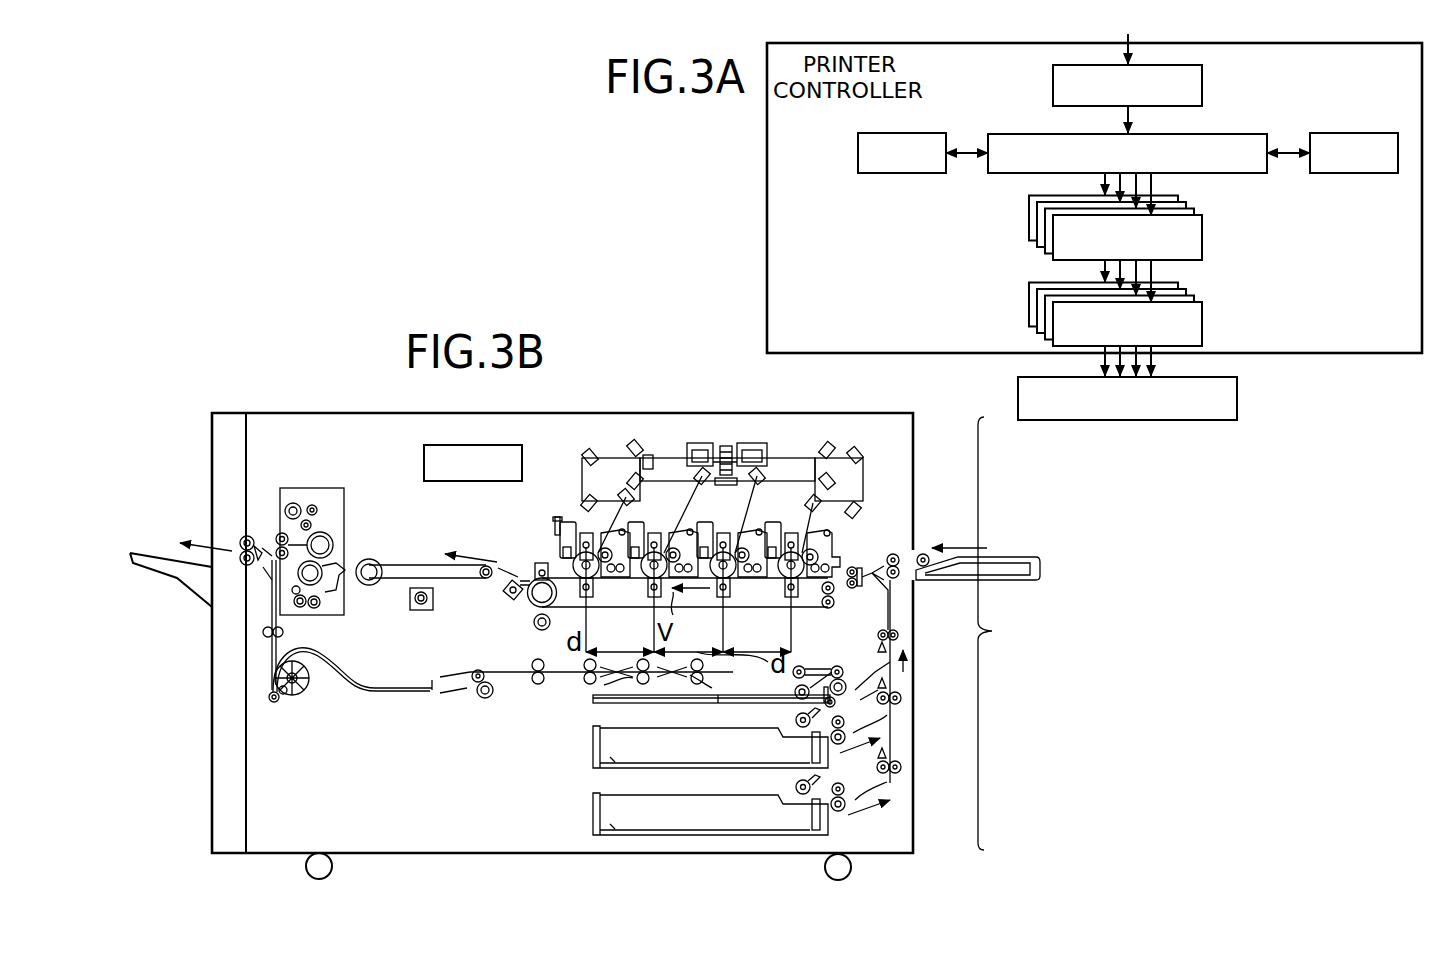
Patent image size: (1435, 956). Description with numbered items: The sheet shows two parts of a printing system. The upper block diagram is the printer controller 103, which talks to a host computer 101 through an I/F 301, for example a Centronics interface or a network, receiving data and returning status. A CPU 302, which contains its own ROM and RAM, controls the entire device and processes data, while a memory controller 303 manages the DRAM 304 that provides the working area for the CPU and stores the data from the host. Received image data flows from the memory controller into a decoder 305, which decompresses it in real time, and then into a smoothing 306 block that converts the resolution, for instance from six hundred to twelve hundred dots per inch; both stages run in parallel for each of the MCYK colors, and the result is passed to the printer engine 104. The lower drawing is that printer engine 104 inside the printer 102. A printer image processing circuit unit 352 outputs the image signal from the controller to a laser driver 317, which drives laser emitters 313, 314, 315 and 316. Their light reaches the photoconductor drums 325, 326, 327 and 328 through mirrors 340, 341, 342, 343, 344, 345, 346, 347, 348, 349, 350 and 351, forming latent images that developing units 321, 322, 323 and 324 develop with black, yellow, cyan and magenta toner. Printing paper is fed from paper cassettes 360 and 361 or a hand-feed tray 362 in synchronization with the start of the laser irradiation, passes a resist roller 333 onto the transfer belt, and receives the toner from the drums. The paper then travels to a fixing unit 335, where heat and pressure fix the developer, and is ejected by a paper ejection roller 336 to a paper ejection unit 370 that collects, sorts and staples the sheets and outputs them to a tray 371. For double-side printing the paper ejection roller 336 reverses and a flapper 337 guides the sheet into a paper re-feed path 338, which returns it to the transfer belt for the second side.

In FIG. 3A, the host computer 101 is at (1126, 38).
In FIG. 3A, the printer controller 103 is at (767, 152).
In FIG. 3A, the I/F 301 is at (1203, 83).
In FIG. 3A, the CPU 302 is at (1353, 133).
In FIG. 3A, the memory controller 303 is at (1013, 134).
In FIG. 3A, the DRAM 304 is at (858, 153).
In FIG. 3A, the decoder 305 is at (1203, 233).
In FIG. 3A, the smoothing 306 is at (1203, 315).
In FIG. 3A, the printer engine 104 is at (1238, 399).
In FIG. 3B, the printer 102 is at (1008, 633).
In FIG. 3B, the laser emitter 313 is at (698, 443).
In FIG. 3B, the laser emitter 314 is at (650, 458).
In FIG. 3B, the laser emitter 315 is at (733, 452).
In FIG. 3B, the laser emitter 316 is at (750, 443).
In FIG. 3B, the laser driver 317 is at (702, 484).
In FIG. 3B, the developing unit 321 is at (558, 513).
In FIG. 3B, the developing unit 322 is at (694, 590).
In FIG. 3B, the developing unit 323 is at (758, 484).
In FIG. 3B, the developing unit 324 is at (836, 548).
In FIG. 3B, the photoconductor drum 325 is at (540, 567).
In FIG. 3B, the photoconductor drum 326 is at (640, 587).
In FIG. 3B, the photoconductor drum 327 is at (740, 590).
In FIG. 3B, the photoconductor drum 328 is at (805, 600).
In FIG. 3B, the resist roller 333 is at (927, 553).
In FIG. 3B, the fixing unit 335 is at (344, 520).
In FIG. 3B, the paper ejection roller 336 is at (256, 536).
In FIG. 3B, the flapper 337 is at (263, 567).
In FIG. 3B, the paper re-feed path 338 is at (535, 684).
In FIG. 3B, the mirror 340 is at (586, 455).
In FIG. 3B, the mirror 341 is at (584, 502).
In FIG. 3B, the mirror 342 is at (583, 462).
In FIG. 3B, the mirror 343 is at (631, 445).
In FIG. 3B, the mirror 344 is at (630, 479).
In FIG. 3B, the mirror 345 is at (626, 497).
In FIG. 3B, the mirror 346 is at (835, 446).
In FIG. 3B, the mirror 347 is at (845, 480).
In FIG. 3B, the mirror 348 is at (812, 497).
In FIG. 3B, the mirror 349 is at (858, 455).
In FIG. 3B, the mirror 350 is at (863, 515).
In FIG. 3B, the mirror 351 is at (822, 452).
In FIG. 3B, the printer image processing circuit unit 352 is at (424, 460).
In FIG. 3B, the paper cassette 360 is at (593, 754).
In FIG. 3B, the paper cassette 361 is at (593, 821).
In FIG. 3B, the hand-feed tray 362 is at (943, 582).
In FIG. 3B, the paper ejection unit 370 is at (212, 768).
In FIG. 3B, the tray 371 is at (150, 555).